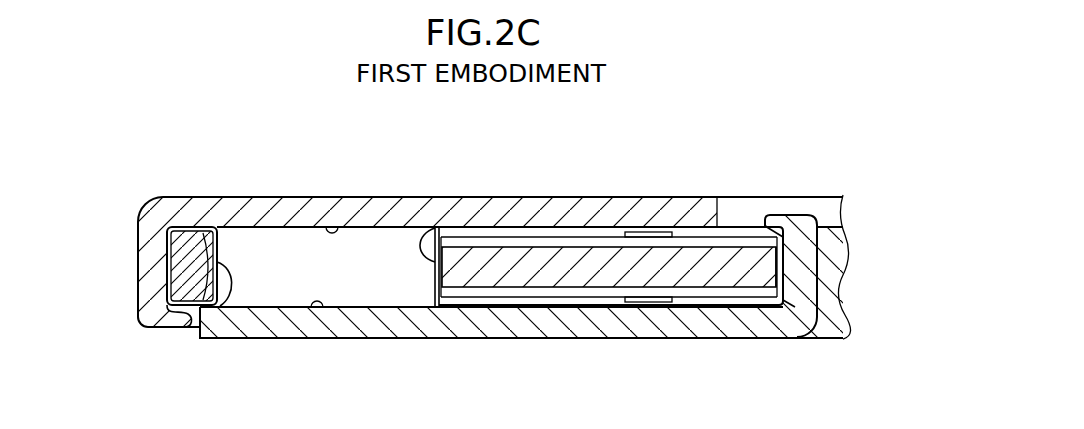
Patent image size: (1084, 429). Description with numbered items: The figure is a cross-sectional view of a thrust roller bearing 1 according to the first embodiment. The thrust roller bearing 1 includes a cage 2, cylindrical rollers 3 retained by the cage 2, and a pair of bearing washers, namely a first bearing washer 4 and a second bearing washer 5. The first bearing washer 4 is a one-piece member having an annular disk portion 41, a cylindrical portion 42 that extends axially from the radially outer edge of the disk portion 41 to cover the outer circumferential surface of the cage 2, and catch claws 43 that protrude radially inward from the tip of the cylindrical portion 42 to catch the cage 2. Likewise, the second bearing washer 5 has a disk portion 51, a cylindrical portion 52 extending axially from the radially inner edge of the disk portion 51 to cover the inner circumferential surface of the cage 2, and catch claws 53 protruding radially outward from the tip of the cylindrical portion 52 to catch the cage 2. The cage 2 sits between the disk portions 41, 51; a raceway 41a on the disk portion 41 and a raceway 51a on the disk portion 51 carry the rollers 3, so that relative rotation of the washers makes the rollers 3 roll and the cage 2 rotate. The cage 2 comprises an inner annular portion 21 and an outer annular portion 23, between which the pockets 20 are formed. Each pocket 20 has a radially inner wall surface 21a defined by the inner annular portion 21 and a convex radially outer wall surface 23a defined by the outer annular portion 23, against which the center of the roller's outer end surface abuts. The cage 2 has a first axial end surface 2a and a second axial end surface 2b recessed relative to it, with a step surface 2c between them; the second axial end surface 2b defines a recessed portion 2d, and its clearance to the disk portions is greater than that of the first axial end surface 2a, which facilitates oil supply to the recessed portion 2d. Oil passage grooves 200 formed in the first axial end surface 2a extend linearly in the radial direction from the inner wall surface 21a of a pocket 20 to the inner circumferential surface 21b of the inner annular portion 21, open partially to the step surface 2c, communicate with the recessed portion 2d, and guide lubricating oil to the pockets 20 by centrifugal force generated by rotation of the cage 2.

The thrust roller bearing 1 is at (128, 325).
The cage 2 is at (519, 267).
The first axial end surface 2a is at (483, 229).
The second axial end surface 2b is at (722, 236).
The step surface 2c is at (640, 233).
The recessed portion 2d is at (742, 230).
The cylindrical roller 3 is at (250, 238).
The first bearing washer 4 is at (280, 197).
The disk portion 41 is at (386, 205).
The raceway 41a is at (327, 229).
The cylindrical portion 42 is at (152, 263).
The catch claws 43 is at (180, 322).
The second bearing washer 5 is at (440, 337).
The disk portion 51 is at (383, 322).
The raceway 51a is at (313, 307).
The cylindrical portion 52 is at (805, 279).
The catch claws 53 is at (775, 222).
The pocket 20 is at (160, 267).
The outer annular portion 23 is at (187, 253).
The outer wall surface 23a is at (227, 292).
The inner annular portion 21 is at (519, 260).
The inner wall surface 21a is at (425, 250).
The inner circumferential surface 21b is at (778, 264).
The oil passage groove 200 is at (560, 232).